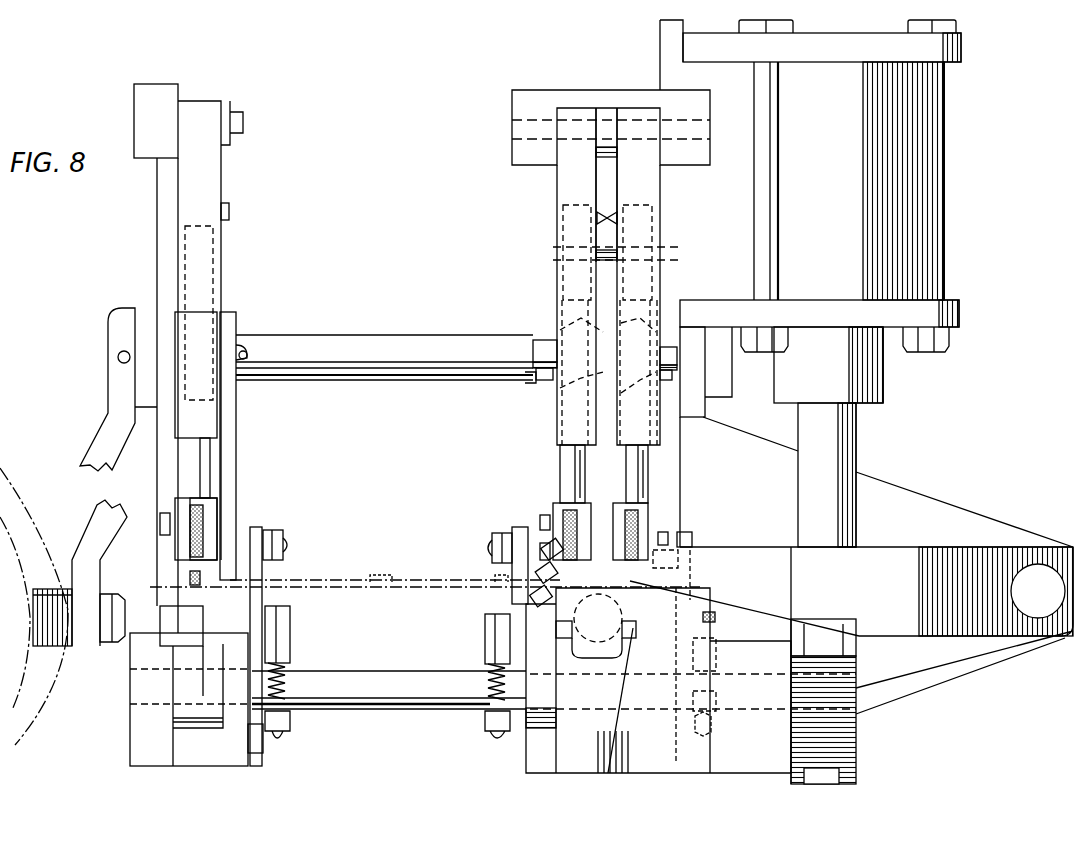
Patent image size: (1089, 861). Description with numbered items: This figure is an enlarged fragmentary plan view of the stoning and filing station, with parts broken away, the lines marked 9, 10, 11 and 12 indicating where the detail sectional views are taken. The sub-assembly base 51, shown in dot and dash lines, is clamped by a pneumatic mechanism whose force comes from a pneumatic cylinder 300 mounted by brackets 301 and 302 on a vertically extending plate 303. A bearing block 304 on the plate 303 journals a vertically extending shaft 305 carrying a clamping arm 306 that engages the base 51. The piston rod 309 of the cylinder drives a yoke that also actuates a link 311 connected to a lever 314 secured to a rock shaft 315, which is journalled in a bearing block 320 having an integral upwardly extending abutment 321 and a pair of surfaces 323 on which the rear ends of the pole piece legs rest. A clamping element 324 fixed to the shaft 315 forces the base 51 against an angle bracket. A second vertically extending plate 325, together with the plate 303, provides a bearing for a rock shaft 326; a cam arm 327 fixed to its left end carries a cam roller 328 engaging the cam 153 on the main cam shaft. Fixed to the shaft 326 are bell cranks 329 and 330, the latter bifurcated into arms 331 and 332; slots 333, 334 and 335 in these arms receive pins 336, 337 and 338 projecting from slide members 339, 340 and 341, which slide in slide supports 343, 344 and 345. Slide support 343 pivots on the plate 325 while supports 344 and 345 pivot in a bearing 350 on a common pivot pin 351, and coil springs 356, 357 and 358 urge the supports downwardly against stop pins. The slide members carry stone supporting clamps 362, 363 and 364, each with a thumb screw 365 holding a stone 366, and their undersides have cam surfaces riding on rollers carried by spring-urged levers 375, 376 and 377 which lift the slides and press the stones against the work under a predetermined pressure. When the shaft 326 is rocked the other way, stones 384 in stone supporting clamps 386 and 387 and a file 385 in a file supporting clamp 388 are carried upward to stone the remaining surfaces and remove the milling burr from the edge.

The section line 9— 9 is at (274, 22).
The section line 10— 10 is at (588, 37).
The section line 11— 11 is at (1020, 31).
The section line 12— 12 is at (143, 580).
The sub-assembly base 51 is at (332, 588).
The cam 153 is at (18, 484).
The pneumatic cylinder 300 is at (900, 173).
The bracket 301 is at (955, 55).
The bracket 302 is at (960, 315).
The vertically extending plate 303 is at (672, 235).
The bearing block 304 is at (893, 483).
The vertically extending shaft 305 is at (1025, 580).
The clamping arm 306 is at (945, 585).
The piston rod 309 is at (856, 445).
The link 311 is at (840, 784).
The lever 314 is at (856, 748).
The rock shaft 315 is at (372, 706).
The bearing block 320 is at (790, 773).
The abutment 321 is at (608, 735).
The surfaces 323 is at (636, 660).
The clamping element 324 is at (180, 640).
The vertically extending plate 325 is at (168, 208).
The rock shaft 326 is at (386, 380).
The cam arm 327 is at (100, 512).
The cam roller 328 is at (50, 650).
The bell crank 329 is at (228, 417).
The bell crank 330 is at (601, 377).
The arm 331 is at (548, 340).
The arm 332 is at (668, 347).
The slot 333 is at (245, 350).
The slot 334 is at (545, 370).
The slot 335 is at (676, 362).
The pin 336 is at (247, 352).
The pin 337 is at (545, 383).
The pin 338 is at (678, 380).
The slide member 339 is at (203, 460).
The slide member 340 is at (568, 461).
The slide member 341 is at (640, 461).
The slide support 343 is at (210, 175).
The slide support 344 is at (560, 183).
The slide support 345 is at (650, 190).
The bearing 350 is at (530, 98).
The pivot pin 351 is at (515, 127).
The coil spring 356 is at (229, 212).
The coil spring 357 is at (600, 216).
The coil spring 358 is at (617, 216).
The stone supporting clamp 362 is at (213, 530).
The stone supporting clamp 363 is at (575, 510).
The stone supporting clamp 364 is at (640, 510).
The thumb screw 365 is at (160, 520).
The stones 366 is at (205, 512).
The lever 375 is at (263, 577).
The lever 376 is at (516, 596).
The lever 377 is at (695, 538).
The stones 384 is at (197, 589).
The file 385 is at (528, 585).
The stone supporting clamp 386 is at (208, 560).
The stone supporting clamp 387 is at (703, 550).
The file supporting clamp 388 is at (510, 578).